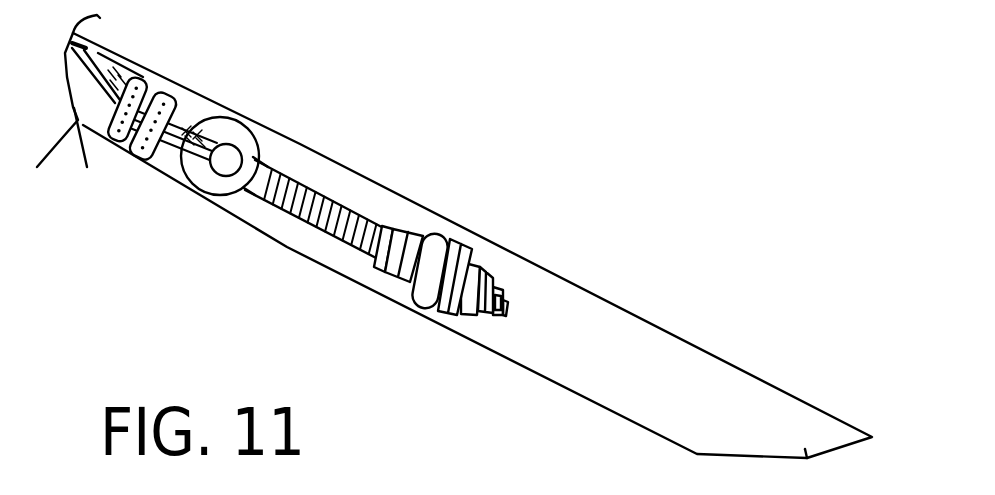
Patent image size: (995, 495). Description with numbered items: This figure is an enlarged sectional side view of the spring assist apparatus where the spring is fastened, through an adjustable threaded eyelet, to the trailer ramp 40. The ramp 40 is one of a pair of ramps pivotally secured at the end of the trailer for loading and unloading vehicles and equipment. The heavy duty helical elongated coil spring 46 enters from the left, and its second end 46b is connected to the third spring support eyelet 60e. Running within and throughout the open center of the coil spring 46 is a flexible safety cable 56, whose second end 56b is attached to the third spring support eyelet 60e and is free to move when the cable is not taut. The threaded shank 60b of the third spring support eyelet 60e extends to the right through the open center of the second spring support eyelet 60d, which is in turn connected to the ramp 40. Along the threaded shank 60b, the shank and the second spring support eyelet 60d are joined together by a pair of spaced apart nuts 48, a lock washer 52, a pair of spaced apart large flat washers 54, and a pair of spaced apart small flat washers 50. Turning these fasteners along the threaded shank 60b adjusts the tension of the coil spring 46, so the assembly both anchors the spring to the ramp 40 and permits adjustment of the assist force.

The ramp 40 is at (677, 355).
The helical elongated coil spring 46 is at (143, 152).
The second end of coil spring 46b is at (173, 160).
The nuts 48 is at (397, 228).
The small flat washers 50 is at (420, 233).
The lock washer 52 is at (472, 263).
The large flat washers 54 is at (426, 233).
The flexible safety cable 56 is at (82, 137).
The second end of cable 56b is at (187, 121).
The threaded shank 60b is at (302, 222).
The second spring support eyelet 60d is at (447, 238).
The third spring support eyelet 60e is at (237, 140).